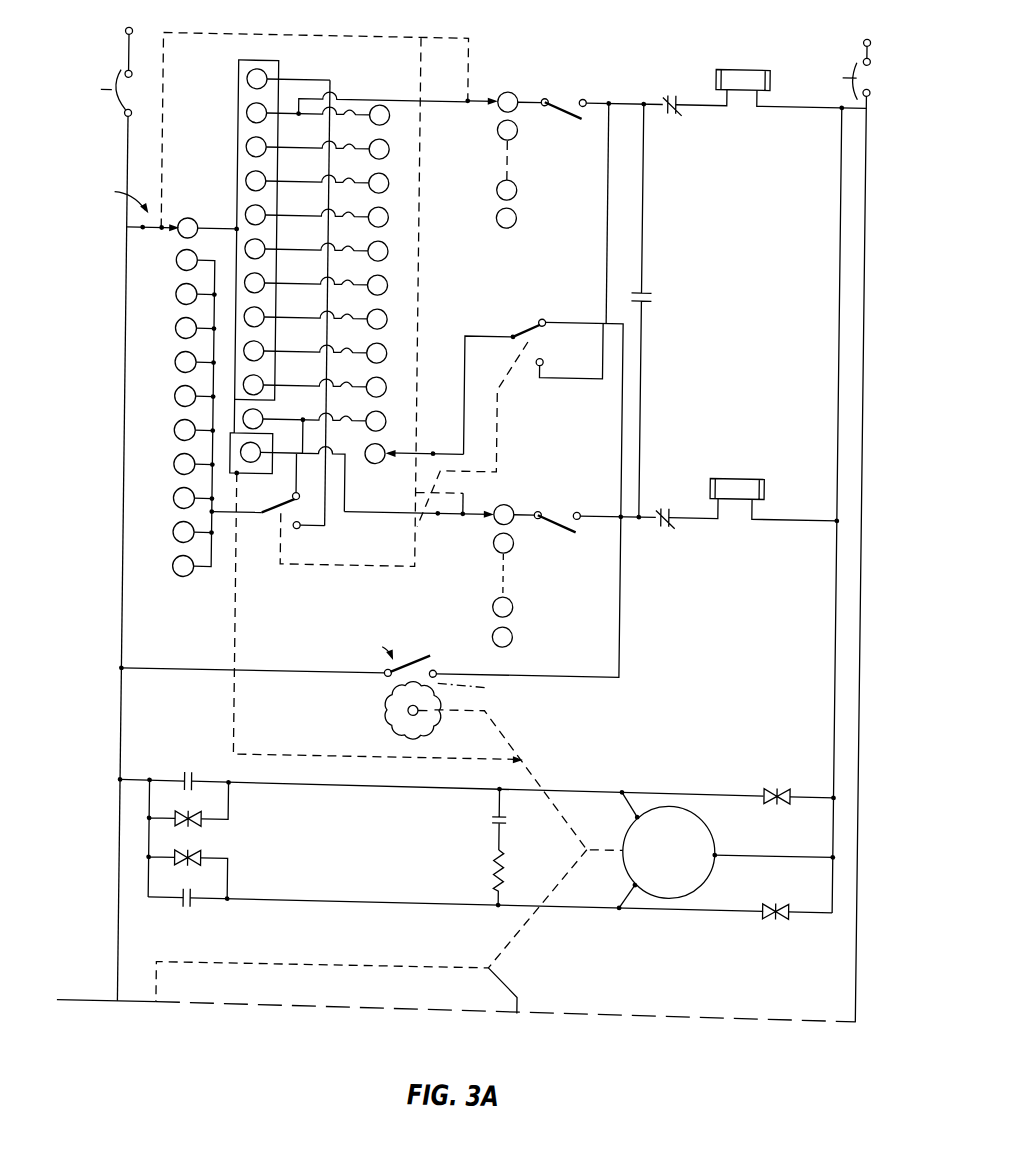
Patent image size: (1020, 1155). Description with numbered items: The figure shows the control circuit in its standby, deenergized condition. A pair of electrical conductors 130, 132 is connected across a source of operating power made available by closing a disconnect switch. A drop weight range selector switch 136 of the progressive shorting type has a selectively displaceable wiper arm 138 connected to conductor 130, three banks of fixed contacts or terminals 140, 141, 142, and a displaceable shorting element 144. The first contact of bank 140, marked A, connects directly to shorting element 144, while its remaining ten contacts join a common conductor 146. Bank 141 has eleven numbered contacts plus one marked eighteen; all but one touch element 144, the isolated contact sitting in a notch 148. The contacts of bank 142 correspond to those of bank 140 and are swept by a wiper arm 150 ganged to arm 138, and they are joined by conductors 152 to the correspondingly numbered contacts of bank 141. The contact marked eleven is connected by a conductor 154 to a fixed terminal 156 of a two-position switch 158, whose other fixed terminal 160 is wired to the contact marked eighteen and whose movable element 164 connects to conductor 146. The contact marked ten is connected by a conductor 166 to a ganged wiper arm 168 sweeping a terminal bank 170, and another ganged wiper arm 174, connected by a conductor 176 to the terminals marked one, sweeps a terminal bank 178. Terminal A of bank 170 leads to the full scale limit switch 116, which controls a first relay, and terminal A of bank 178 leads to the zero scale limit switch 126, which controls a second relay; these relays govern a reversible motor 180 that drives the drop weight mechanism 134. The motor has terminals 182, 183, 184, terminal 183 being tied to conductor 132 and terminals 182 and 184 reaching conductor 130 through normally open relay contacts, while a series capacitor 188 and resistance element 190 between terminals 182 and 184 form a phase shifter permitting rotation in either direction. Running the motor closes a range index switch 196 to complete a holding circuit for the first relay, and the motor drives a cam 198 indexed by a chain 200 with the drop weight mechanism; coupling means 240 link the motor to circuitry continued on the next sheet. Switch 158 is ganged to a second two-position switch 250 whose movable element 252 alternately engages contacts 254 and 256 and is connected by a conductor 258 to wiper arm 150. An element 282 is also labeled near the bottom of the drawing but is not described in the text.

The full scale limit switch 116 is at (558, 117).
The zero scale limit switch 126 is at (555, 527).
The electrical conductor 130 is at (124, 143).
The electrical conductor 132 is at (861, 170).
The drop weight mechanism 134 is at (116, 78).
The drop weight range selector switch 136 is at (282, 57).
The wiper arm 138 is at (147, 237).
The bank of fixed contacts 140 is at (178, 582).
The contact bank 141 is at (262, 80).
The contact bank 142 is at (372, 468).
The shorting element 144 is at (234, 65).
The common conductor 146 is at (240, 518).
The notch 148 is at (264, 405).
The wiper arm 150 is at (406, 455).
The electrical conductors 152 is at (347, 120).
The conductor 154 is at (326, 86).
The fixed terminal 156 is at (297, 534).
The two-position switch 158 is at (312, 538).
The fixed terminal 160 is at (296, 496).
The movable element 164 is at (273, 515).
The conductor 166 is at (345, 102).
The wiper arm 168 is at (447, 104).
The contact bank 170 is at (513, 224).
The wiper arm 174 is at (452, 521).
The conductor 176 is at (356, 515).
The terminal bank 178 is at (513, 641).
The reversible motor 180 is at (714, 880).
The motor terminal 182 is at (634, 814).
The motor terminal 183 is at (721, 848).
The motor terminal 184 is at (637, 883).
The capacitor 188 is at (496, 822).
The resistance element 190 is at (497, 868).
The range index switch 196 is at (436, 662).
The cam 198 is at (389, 713).
The chain 200 is at (496, 688).
The mechanical coupling means 240 is at (256, 965).
The second two-position switch 250 is at (495, 326).
The movable element 252 is at (511, 344).
The contact 254 is at (542, 362).
The contact 256 is at (544, 325).
The electrical conductor 258 is at (463, 377).
The drive shaft 282 is at (528, 995).